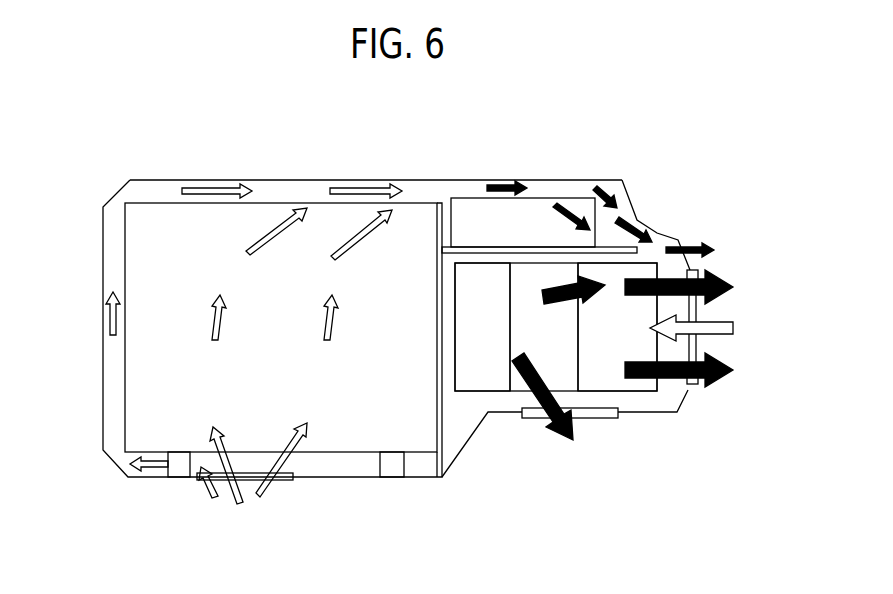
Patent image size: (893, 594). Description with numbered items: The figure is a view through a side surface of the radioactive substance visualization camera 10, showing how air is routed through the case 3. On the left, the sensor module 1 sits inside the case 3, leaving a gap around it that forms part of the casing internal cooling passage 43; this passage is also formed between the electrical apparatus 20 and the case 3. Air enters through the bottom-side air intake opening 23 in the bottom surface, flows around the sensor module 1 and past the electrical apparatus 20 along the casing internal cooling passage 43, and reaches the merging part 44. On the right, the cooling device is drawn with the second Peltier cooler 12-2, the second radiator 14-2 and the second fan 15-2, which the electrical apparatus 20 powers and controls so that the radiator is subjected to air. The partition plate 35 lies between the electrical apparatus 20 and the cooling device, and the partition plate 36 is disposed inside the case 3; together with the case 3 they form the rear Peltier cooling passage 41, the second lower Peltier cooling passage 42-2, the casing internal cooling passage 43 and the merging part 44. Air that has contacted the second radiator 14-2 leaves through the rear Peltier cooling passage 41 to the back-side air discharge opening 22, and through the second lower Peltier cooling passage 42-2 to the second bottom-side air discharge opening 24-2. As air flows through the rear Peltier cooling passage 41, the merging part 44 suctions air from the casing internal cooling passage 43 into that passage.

The radioactive substance visualization camera 10 is at (450, 136).
The sensor module 1 is at (272, 200).
The casing internal cooling passage 43 is at (314, 192).
The case 3 is at (102, 253).
The bottom-side air intake opening 23 is at (268, 490).
The partition plate 36 is at (437, 463).
The electrical apparatus 20 is at (537, 197).
The partition plate 35 is at (612, 247).
The merging part 44 is at (657, 240).
The second Peltier cooler 12-2 is at (565, 378).
The second radiator 14-2 is at (472, 383).
The second fan 15-2 is at (645, 385).
The second lower Peltier cooling passage 42-2 is at (560, 440).
The second bottom-side air discharge opening 24-2 is at (602, 418).
The rear Peltier cooling passage 41 is at (672, 398).
The back-side air discharge opening 22 is at (700, 347).